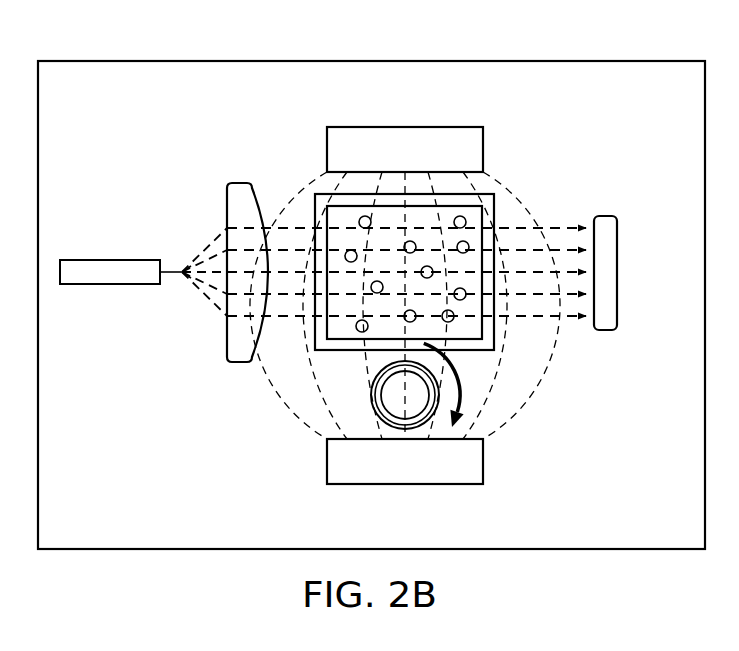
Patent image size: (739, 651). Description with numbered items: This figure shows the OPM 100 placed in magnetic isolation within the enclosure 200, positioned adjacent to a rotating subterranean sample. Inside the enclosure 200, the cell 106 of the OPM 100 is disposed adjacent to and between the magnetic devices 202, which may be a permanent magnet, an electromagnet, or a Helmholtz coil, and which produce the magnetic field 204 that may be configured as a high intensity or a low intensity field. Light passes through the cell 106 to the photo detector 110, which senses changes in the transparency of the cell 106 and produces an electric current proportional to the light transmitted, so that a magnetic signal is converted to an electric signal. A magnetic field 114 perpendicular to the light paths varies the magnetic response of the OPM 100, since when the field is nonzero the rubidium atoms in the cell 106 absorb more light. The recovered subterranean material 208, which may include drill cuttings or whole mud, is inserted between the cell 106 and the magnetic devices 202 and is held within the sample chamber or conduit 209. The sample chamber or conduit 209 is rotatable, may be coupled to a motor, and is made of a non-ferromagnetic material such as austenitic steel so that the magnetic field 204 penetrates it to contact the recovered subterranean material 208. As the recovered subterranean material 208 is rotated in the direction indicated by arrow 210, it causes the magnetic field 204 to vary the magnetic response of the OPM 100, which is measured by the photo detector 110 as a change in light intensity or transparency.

The enclosure 200 is at (237, 58).
The OPM 100 is at (146, 136).
The cell 106 is at (313, 209).
The photo detector 110 is at (619, 257).
The magnetic field 114 is at (519, 193).
The magnetic devices 202 is at (410, 126).
The magnetic field 204 is at (560, 345).
The recovered subterranean material 208 is at (397, 400).
The sample chamber or conduit 209 is at (376, 372).
The arrow 210 is at (463, 387).